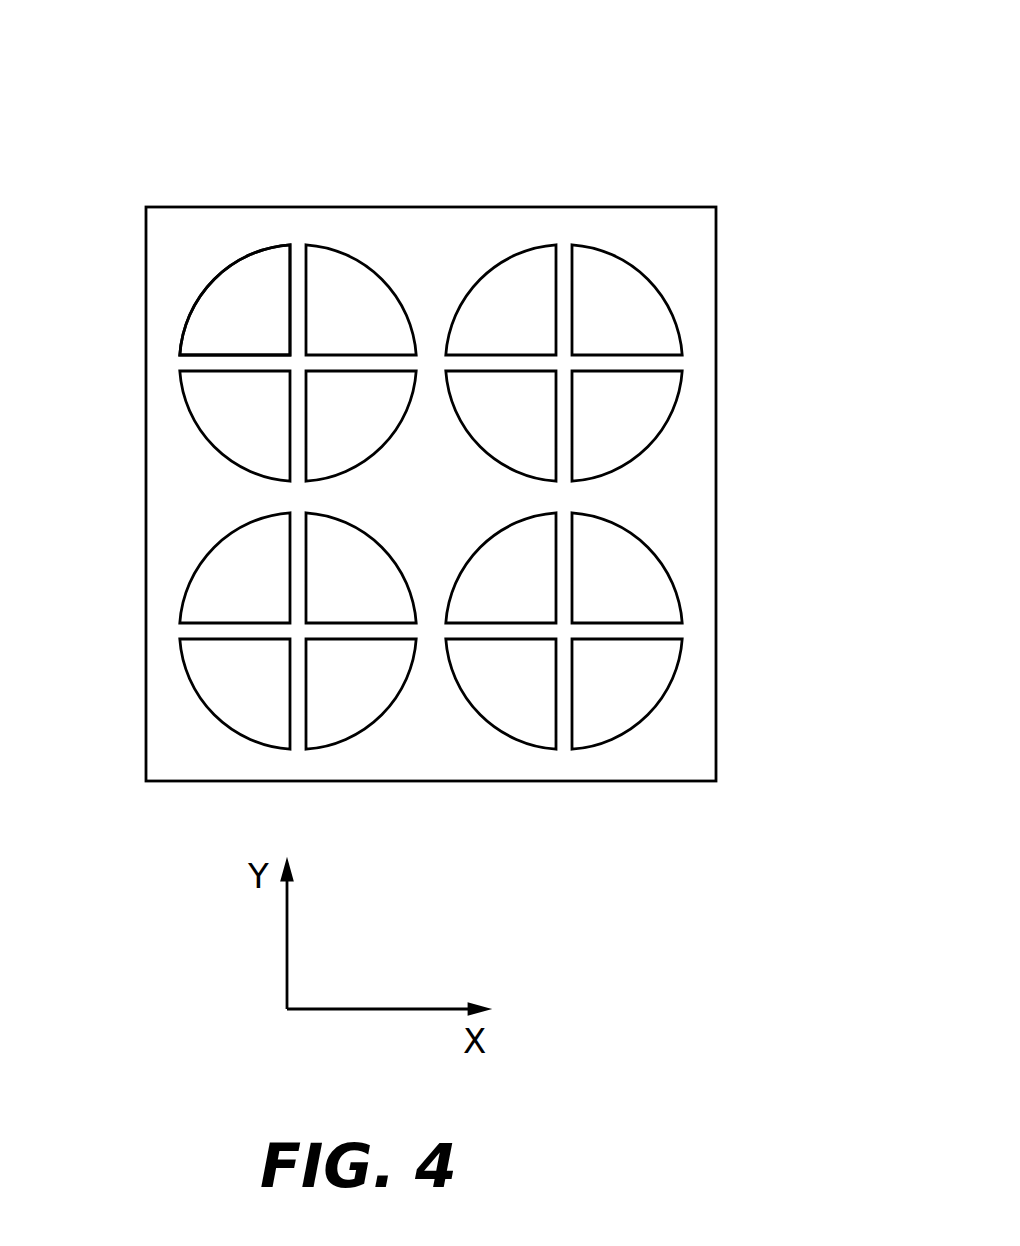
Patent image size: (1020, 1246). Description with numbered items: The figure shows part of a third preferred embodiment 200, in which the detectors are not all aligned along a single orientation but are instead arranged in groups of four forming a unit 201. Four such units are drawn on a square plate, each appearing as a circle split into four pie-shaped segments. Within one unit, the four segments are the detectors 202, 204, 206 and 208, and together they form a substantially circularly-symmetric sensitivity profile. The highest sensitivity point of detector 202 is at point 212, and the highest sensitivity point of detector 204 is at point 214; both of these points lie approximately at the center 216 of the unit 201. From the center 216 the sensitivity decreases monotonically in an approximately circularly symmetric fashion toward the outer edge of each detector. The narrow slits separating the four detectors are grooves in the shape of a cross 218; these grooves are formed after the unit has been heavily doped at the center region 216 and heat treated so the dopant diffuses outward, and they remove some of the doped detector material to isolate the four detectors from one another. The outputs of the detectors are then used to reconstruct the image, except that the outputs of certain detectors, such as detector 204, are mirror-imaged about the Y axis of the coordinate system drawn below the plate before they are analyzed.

The third preferred embodiment 200 is at (753, 438).
The unit 201 is at (160, 362).
The detector 202 is at (227, 289).
The detector 204 is at (366, 287).
The detector 206 is at (358, 423).
The detector 208 is at (247, 447).
The highest sensitivity point 212 is at (278, 343).
The highest sensitivity point 214 is at (320, 342).
The center 216 is at (297, 363).
The cross 218 is at (348, 363).